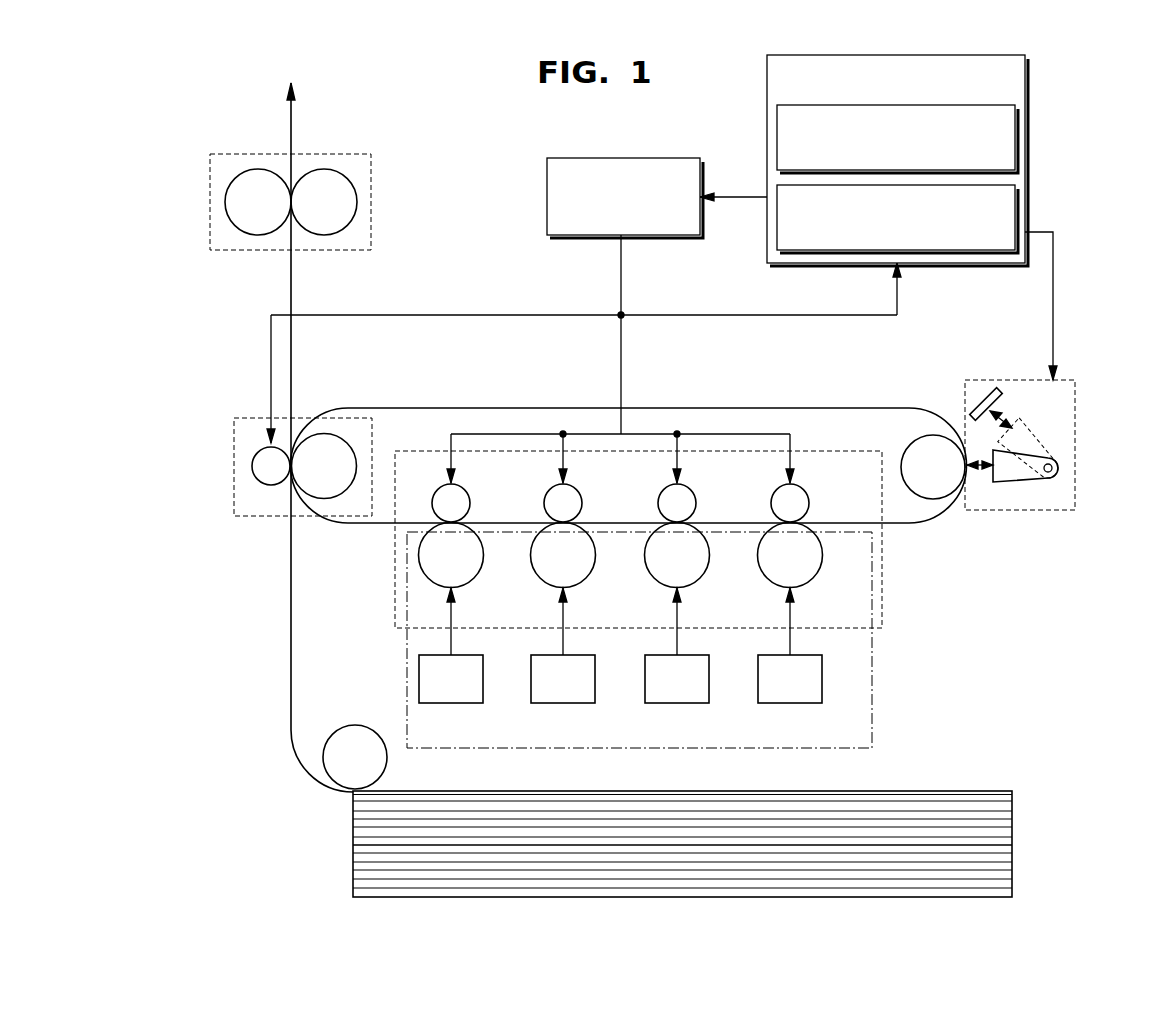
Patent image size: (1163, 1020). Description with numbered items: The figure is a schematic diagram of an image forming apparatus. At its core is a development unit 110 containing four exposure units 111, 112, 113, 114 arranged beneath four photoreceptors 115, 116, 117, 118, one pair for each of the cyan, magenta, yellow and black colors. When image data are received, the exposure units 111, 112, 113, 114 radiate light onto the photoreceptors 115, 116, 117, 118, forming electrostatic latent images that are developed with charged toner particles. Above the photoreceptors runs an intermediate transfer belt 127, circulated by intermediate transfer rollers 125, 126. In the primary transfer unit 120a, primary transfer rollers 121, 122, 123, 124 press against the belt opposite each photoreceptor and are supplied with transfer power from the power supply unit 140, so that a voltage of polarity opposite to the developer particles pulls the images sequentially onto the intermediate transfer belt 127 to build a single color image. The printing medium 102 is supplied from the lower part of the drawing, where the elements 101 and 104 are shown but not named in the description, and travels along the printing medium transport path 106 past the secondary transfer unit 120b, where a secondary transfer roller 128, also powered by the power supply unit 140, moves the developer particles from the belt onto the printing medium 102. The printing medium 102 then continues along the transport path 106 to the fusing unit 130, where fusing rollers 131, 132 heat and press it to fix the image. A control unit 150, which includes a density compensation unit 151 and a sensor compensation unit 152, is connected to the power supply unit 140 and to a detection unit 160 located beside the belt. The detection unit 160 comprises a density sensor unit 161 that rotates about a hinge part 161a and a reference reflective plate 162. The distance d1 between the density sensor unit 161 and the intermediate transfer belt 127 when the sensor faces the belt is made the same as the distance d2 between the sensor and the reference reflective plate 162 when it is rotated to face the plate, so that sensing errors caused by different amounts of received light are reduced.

The paper feeding cassette 101 is at (1012, 792).
The printing medium 102 is at (950, 853).
The pickup roller 104 is at (350, 773).
The printing medium transport path 106 is at (288, 675).
The development unit 110 is at (872, 692).
The exposure unit 111 is at (452, 703).
The exposure unit 112 is at (564, 703).
The exposure unit 113 is at (678, 703).
The exposure unit 114 is at (791, 703).
The photoreceptor 115 is at (458, 588).
The photoreceptor 116 is at (570, 588).
The photoreceptor 117 is at (684, 588).
The photoreceptor 118 is at (797, 588).
The primary transfer unit 120a is at (883, 570).
The secondary transfer unit 120b is at (233, 467).
The primary transfer roller 121 is at (463, 486).
The primary transfer roller 122 is at (575, 486).
The primary transfer roller 123 is at (689, 486).
The primary transfer roller 124 is at (802, 486).
The intermediate transfer roller 125 is at (318, 490).
The intermediate transfer roller 126 is at (917, 445).
The intermediate transfer belt 127 is at (924, 402).
The secondary transfer roller 128 is at (270, 487).
The fusing unit 130 is at (323, 154).
The fusing roller 131 is at (243, 203).
The fusing roller 132 is at (340, 203).
The power supply unit 140 is at (627, 158).
The control unit 150 is at (898, 55).
The density compensation unit 151 is at (1017, 122).
The sensor compensation unit 152 is at (1017, 197).
The detection unit 160 is at (1075, 445).
The density sensor unit 161 is at (1022, 475).
The hinge part 161a is at (1050, 473).
The reference reflective plate 162 is at (984, 397).
The distance d1 is at (979, 479).
The distance d2 is at (1007, 410).